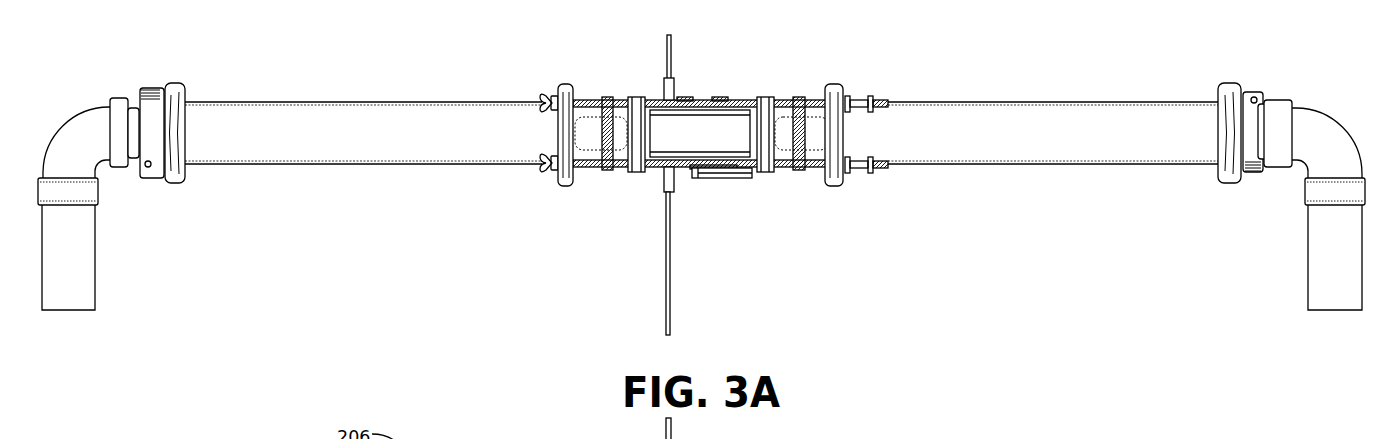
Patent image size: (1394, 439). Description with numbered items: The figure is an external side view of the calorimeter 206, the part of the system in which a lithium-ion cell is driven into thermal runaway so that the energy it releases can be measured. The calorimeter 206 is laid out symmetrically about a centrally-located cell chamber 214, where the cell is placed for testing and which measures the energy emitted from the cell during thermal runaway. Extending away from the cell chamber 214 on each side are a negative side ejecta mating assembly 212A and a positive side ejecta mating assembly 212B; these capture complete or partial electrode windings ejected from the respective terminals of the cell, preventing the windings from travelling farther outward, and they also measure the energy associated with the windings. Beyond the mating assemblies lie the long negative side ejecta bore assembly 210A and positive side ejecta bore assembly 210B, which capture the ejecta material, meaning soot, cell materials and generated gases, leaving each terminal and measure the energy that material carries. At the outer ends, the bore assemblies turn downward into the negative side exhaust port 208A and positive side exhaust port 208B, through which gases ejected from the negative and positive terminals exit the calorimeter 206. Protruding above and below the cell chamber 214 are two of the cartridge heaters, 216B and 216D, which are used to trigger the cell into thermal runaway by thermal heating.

The calorimeter 206 is at (415, 53).
The negative side exhaust port 208A is at (82, 278).
The positive side exhaust port 208B is at (1310, 275).
The negative side ejecta bore assembly 210A is at (297, 127).
The positive side ejecta bore assembly 210B is at (1055, 127).
The negative side ejecta mating assembly 212A is at (595, 112).
The positive side ejecta mating assembly 212B is at (818, 112).
The cell chamber 214 is at (687, 127).
The cartridge heater 216B is at (673, 50).
The cartridge heater 216D is at (672, 283).